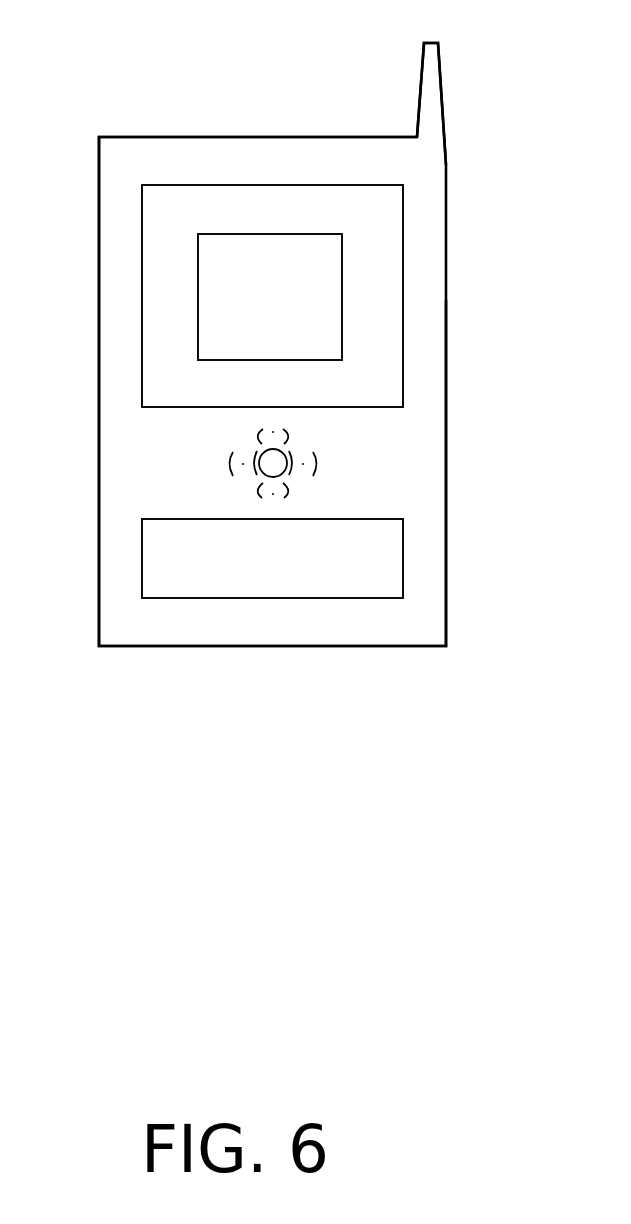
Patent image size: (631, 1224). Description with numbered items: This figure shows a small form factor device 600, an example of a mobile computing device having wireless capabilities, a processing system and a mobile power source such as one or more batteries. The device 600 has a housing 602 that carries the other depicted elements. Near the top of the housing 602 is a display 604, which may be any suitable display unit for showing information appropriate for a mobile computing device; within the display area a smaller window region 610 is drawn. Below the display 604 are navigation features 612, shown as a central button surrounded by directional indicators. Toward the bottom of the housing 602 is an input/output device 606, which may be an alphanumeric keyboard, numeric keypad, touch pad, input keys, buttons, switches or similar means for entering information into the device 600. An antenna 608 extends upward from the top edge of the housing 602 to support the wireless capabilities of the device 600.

The small form factor device 600 is at (106, 52).
The housing 602 is at (447, 393).
The display 604 is at (404, 200).
The input/output (I/O) device 606 is at (404, 550).
The antenna 608 is at (420, 86).
The display window 610 is at (343, 313).
The navigation features 612 is at (334, 456).